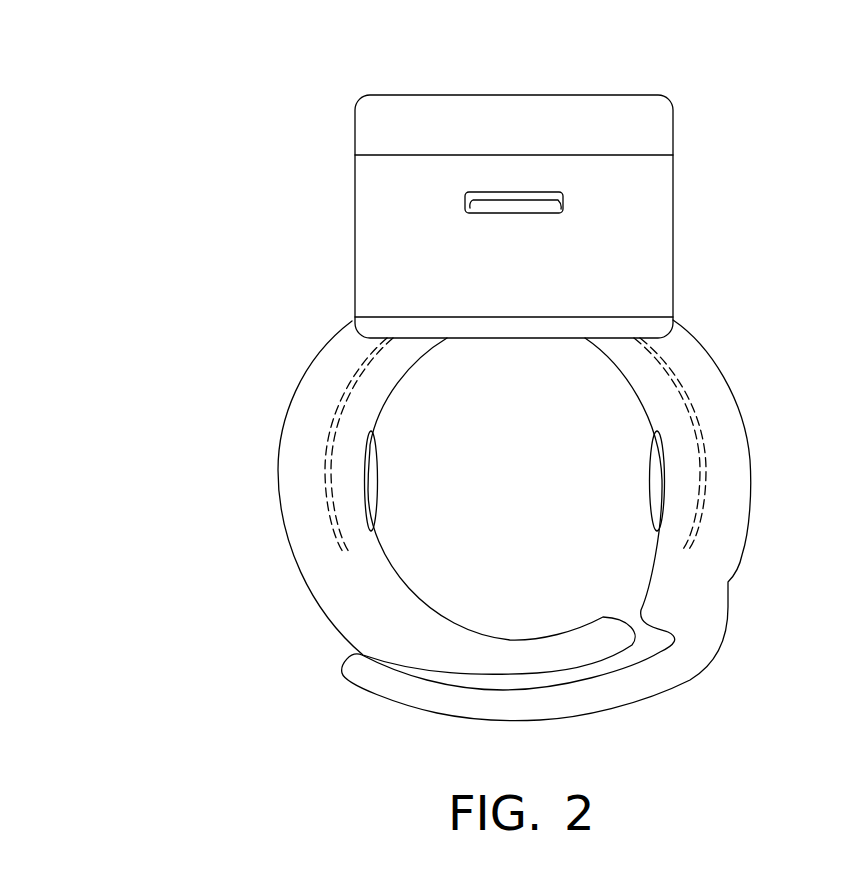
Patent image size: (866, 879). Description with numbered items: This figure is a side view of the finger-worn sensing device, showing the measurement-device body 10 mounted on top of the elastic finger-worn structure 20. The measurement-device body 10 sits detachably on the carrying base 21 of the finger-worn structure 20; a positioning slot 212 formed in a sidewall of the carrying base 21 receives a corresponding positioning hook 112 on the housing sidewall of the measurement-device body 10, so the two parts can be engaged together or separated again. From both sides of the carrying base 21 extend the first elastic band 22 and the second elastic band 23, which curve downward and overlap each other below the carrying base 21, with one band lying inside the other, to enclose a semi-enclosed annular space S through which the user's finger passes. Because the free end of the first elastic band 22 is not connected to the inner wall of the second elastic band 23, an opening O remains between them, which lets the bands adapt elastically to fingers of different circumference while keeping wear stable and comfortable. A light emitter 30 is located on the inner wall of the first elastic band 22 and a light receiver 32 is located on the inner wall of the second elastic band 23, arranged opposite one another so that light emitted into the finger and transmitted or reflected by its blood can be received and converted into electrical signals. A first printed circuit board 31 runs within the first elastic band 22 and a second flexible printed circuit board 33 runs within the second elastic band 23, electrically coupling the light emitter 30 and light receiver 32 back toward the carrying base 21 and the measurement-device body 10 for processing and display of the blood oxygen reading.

The measurement-device body 10 is at (345, 87).
The elastic finger-worn structure 20 is at (90, 52).
The carrying base 21 is at (657, 258).
The first elastic band 22 is at (305, 470).
The second elastic band 23 is at (720, 467).
The positioning hook 112 is at (533, 195).
The positioning slot 212 is at (463, 203).
The light emitter 30 is at (368, 498).
The first printed circuit board 31 is at (328, 432).
The light receiver 32 is at (662, 498).
The second flexible printed circuit board 33 is at (707, 430).
The annular space S is at (557, 528).
The opening O is at (637, 626).